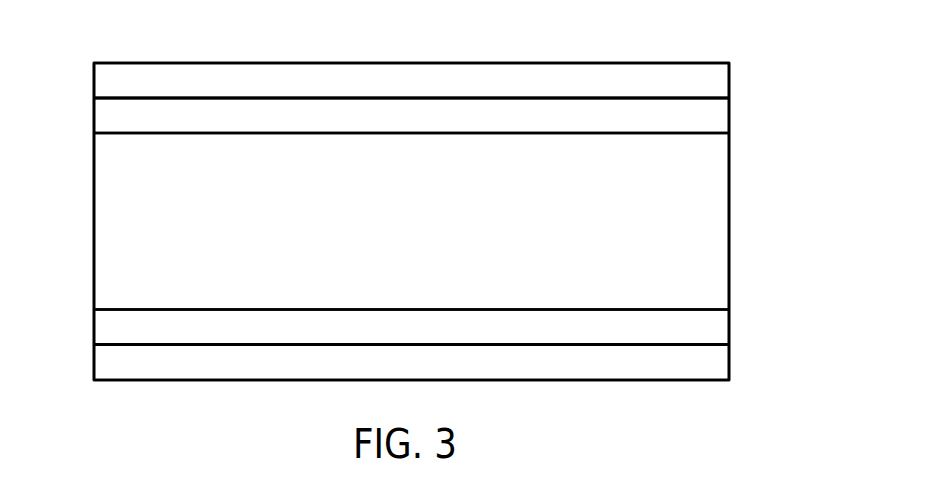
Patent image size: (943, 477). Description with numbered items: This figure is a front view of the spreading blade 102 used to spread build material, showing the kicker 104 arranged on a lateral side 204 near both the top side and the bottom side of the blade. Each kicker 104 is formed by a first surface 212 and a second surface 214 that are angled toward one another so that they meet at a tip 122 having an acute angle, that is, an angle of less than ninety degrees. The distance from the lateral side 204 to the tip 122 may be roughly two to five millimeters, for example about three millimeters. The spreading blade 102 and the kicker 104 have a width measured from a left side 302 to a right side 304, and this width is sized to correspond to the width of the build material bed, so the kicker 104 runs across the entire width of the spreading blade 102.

The spreading blade 102 is at (608, 45).
The kicker 104 is at (733, 78).
The tip 122 is at (490, 97).
The lateral side 204 is at (429, 232).
The first surface 212 is at (191, 73).
The second surface 214 is at (213, 115).
The left side 302 is at (92, 204).
The right side 304 is at (732, 202).